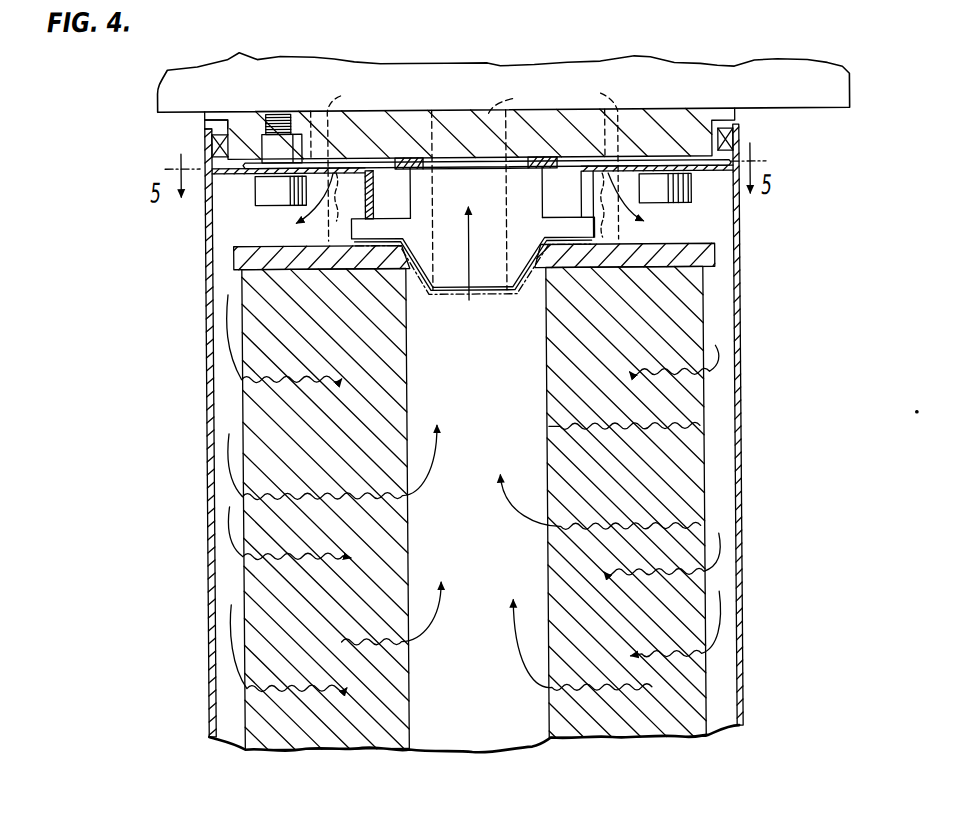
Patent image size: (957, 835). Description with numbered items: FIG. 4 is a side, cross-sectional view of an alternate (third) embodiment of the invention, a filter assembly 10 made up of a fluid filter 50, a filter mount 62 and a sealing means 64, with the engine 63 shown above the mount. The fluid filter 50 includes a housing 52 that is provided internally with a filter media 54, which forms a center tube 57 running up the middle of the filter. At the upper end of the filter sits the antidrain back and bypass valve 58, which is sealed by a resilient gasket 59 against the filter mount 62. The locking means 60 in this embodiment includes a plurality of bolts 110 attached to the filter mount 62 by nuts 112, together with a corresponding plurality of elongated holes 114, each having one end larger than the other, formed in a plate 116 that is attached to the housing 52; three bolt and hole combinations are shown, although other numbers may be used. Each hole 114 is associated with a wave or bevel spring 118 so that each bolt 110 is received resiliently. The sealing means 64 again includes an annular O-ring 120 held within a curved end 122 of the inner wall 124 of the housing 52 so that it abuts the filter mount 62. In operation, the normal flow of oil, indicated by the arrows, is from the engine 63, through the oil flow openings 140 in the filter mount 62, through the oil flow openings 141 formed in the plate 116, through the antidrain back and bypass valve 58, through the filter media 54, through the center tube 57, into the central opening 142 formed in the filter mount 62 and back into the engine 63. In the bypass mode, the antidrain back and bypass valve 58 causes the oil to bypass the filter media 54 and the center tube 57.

The filter assembly 10 is at (470, 5).
The fluid filter 50 is at (822, 434).
The housing 52 is at (742, 630).
The filter media 54 is at (548, 712).
The center tube 57 is at (517, 735).
The antidrain back and bypass valve 58 is at (526, 270).
The resilient gasket 59 is at (538, 169).
The locking means 60 is at (266, 226).
The filter mount 62 is at (737, 112).
The engine 63 is at (405, 84).
The sealing means 64 is at (198, 140).
The bolt 110 is at (273, 193).
The nut 112 is at (263, 140).
The elongated hole 114 is at (217, 180).
The plate 116 is at (371, 210).
The wave or bevel spring 118 is at (262, 158).
The annular O-ring 120 is at (212, 134).
The curved end 122 is at (207, 127).
The inner wall 124 is at (207, 380).
The oil flow openings 140 is at (464, 154).
The oil flow openings 141 is at (469, 206).
The central opening 142 is at (489, 183).